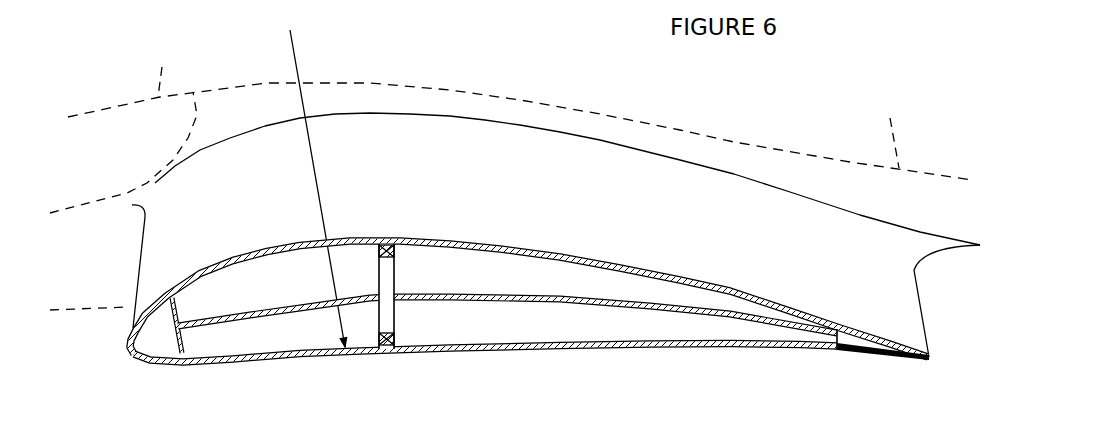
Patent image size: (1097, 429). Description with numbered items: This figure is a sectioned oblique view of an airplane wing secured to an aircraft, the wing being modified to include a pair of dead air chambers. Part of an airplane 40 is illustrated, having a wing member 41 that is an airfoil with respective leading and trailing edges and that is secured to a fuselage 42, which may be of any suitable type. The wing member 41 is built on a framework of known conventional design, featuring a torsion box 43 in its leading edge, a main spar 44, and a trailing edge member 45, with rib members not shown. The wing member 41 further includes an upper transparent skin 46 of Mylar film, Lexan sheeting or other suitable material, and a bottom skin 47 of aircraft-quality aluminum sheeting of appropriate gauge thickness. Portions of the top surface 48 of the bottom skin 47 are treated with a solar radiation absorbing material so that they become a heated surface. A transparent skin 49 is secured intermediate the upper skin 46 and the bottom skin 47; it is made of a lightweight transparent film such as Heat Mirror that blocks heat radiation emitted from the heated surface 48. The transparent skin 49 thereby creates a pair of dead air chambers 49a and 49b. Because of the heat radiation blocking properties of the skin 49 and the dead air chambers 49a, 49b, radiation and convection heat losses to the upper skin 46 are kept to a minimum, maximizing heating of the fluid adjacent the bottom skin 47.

The airplane 40 is at (424, 70).
The wing member 41 is at (765, 208).
The fuselage 42 is at (696, 150).
The torsion box 43 is at (160, 342).
The main spar 44 is at (532, 335).
The trailing edge member 45 is at (869, 342).
The upper transparent skin 46 is at (568, 253).
The bottom skin 47 is at (245, 363).
The top surface of bottom skin 48 is at (607, 333).
The transparent skin 49 is at (507, 355).
The dead air chamber 49a is at (313, 326).
The dead air chamber 49b is at (677, 293).